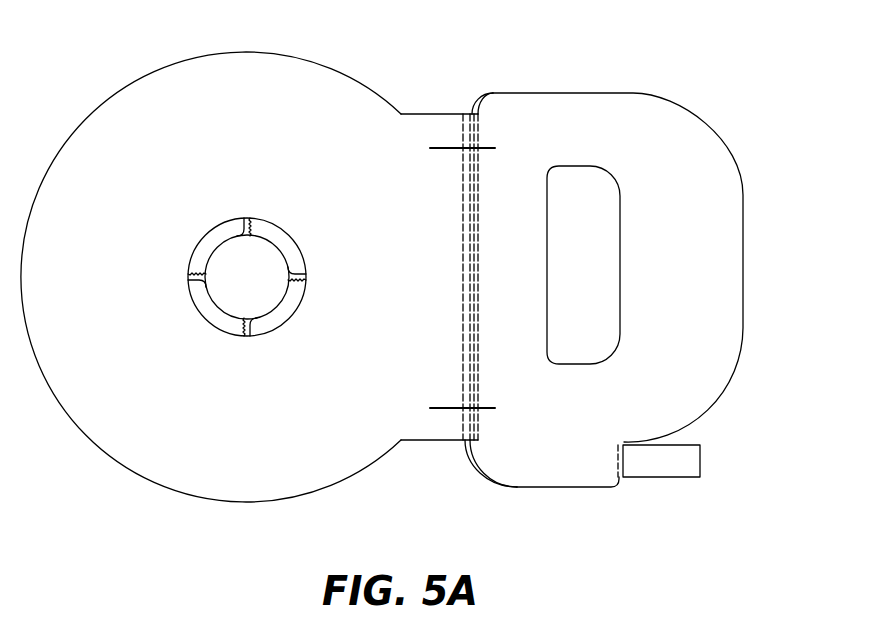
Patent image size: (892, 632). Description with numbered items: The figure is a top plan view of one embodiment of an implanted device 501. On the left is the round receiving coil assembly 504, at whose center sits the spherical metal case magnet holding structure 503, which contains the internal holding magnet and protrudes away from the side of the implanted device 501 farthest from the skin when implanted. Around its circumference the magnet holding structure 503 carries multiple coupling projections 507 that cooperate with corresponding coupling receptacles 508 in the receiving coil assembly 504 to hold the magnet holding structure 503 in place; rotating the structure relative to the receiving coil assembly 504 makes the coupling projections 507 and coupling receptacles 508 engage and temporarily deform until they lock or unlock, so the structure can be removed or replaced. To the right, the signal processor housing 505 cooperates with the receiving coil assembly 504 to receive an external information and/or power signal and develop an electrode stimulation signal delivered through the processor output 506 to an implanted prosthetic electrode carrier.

The implanted device 501 is at (560, 58).
The magnet holding structure 503 is at (228, 253).
The receiving coil assembly 504 is at (350, 444).
The signal processor housing 505 is at (690, 372).
The processor output 506 is at (677, 465).
The coupling projections 507 is at (257, 320).
The coupling receptacles 508 is at (243, 325).